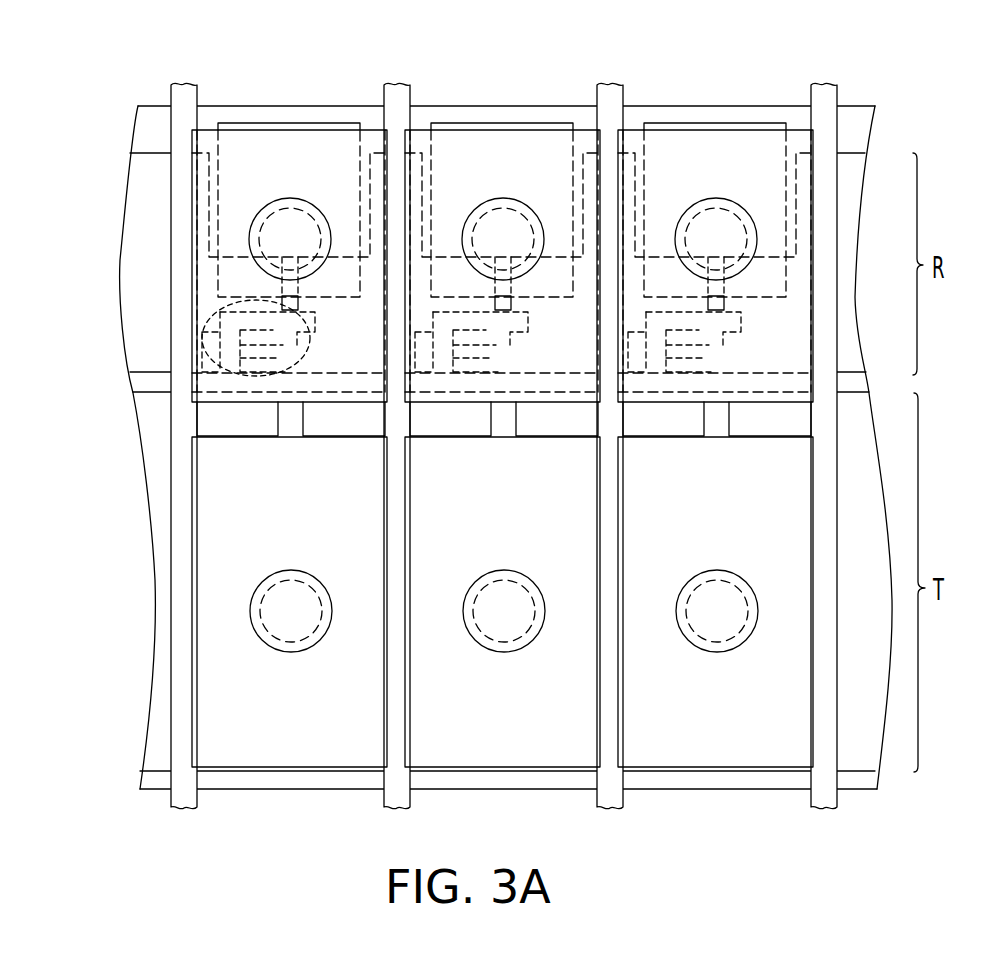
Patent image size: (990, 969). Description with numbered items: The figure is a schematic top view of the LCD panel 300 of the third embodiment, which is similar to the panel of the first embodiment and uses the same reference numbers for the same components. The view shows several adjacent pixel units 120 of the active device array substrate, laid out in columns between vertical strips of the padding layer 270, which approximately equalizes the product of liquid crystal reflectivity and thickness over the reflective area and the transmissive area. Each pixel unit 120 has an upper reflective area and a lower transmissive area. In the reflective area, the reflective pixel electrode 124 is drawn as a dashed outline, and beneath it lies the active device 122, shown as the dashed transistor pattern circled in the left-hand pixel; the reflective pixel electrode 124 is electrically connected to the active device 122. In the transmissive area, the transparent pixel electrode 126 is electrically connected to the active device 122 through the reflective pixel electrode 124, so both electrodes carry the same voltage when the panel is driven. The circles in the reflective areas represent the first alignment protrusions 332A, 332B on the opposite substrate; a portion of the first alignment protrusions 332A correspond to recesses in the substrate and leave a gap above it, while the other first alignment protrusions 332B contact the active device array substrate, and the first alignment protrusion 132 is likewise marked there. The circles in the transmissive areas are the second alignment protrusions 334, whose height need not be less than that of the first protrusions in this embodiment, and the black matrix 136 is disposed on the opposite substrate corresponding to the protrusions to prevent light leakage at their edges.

The LCD panel 300 is at (988, 859).
The padding layer 270 is at (160, 118).
The pixel unit 120 is at (65, 388).
The reflective pixel electrode 124 is at (207, 277).
The active device 122 is at (202, 336).
The transparent pixel electrode 126 is at (202, 468).
The first alignment protrusion 332A is at (252, 232).
The first alignment protrusion 332B is at (492, 200).
The first alignment protrusion 132 is at (268, 248).
The black matrix 136 is at (258, 590).
The second alignment protrusion 334 is at (262, 623).